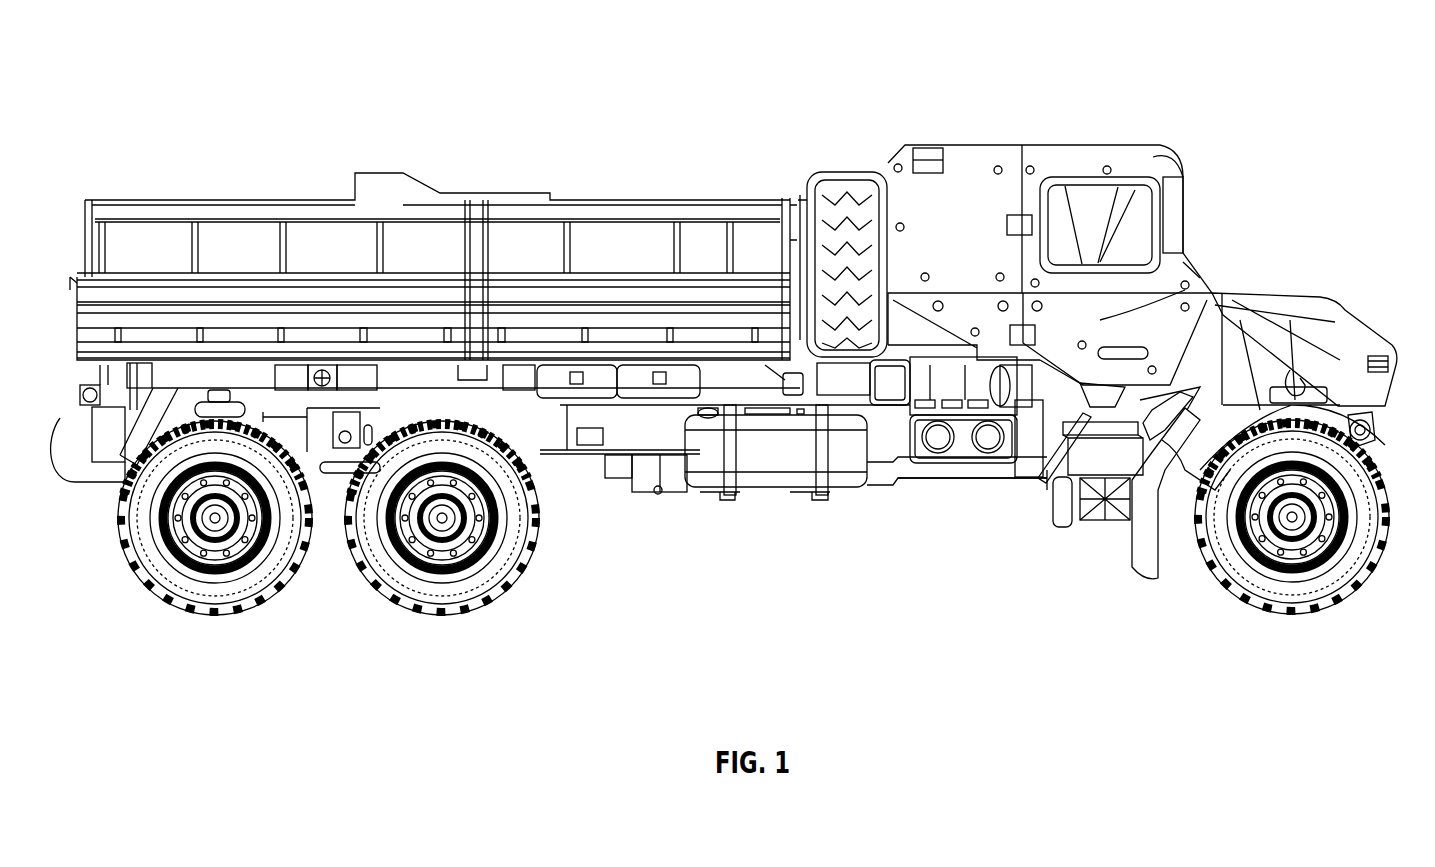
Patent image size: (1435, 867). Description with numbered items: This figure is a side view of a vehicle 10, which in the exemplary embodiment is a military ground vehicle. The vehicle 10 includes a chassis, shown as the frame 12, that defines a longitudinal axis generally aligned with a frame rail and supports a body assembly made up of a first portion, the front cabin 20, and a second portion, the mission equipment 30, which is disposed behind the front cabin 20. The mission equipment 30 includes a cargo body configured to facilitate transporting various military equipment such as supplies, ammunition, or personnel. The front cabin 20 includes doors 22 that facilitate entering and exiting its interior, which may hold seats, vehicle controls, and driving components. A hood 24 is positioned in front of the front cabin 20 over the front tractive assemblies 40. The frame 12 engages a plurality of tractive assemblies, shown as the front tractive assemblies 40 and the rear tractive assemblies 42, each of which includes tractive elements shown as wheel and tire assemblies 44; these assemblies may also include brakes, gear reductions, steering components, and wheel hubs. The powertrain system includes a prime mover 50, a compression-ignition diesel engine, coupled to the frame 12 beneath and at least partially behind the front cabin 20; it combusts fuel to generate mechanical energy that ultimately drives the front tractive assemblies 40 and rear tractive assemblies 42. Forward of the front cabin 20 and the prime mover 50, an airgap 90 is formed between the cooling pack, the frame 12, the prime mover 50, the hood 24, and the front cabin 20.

The vehicle 10 is at (147, 102).
The frame 12 is at (615, 435).
The front cabin 20 is at (1039, 124).
The doors 22 is at (1143, 310).
The hood 24 is at (1333, 337).
The mission equipment 30 is at (527, 171).
The front tractive assemblies 40 is at (1295, 621).
The rear tractive assemblies 42 is at (222, 628).
The wheel and tire assemblies 44 is at (183, 586).
The prime mover 50 is at (957, 498).
The airgap 90 is at (1368, 434).